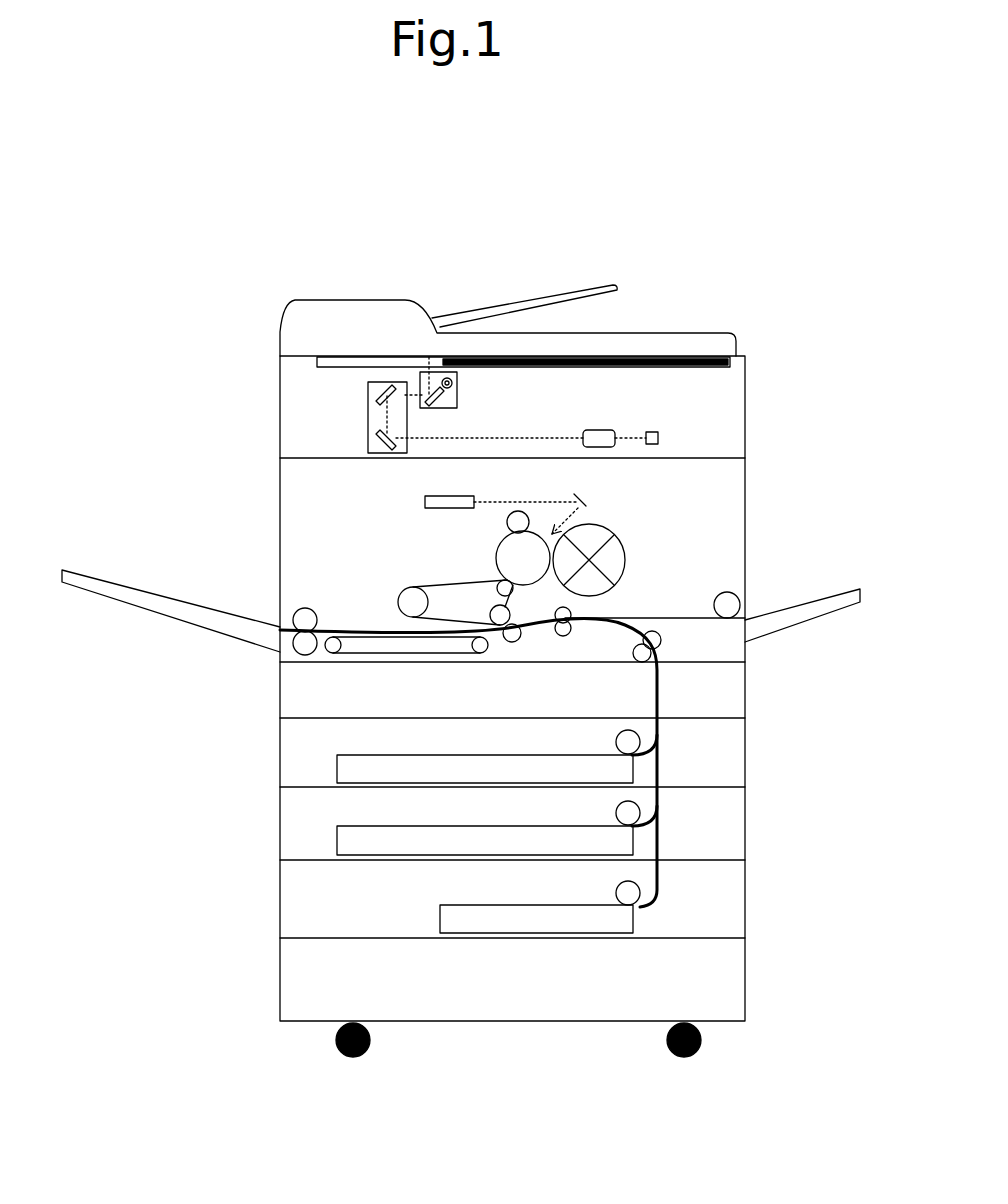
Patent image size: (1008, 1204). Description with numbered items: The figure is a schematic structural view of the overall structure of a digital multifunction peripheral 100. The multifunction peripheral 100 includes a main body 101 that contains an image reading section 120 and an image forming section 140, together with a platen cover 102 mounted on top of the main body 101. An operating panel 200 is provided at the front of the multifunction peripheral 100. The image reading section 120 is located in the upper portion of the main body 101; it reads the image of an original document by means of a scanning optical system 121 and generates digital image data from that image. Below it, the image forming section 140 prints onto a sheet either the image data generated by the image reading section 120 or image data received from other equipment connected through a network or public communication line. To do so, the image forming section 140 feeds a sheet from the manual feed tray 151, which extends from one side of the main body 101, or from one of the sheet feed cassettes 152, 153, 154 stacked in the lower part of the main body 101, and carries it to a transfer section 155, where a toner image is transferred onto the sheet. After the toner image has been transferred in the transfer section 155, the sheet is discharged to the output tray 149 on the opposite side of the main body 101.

The multifunction peripheral 100 is at (737, 224).
The main body 101 is at (258, 470).
The platen cover 102 is at (258, 302).
The operating panel 200 is at (733, 353).
The scanning optical system 121 is at (728, 390).
The image reading section 120 is at (745, 425).
The image forming section 140 is at (745, 535).
The transfer section 155 is at (513, 644).
The output tray 149 is at (87, 580).
The manual feed tray 151 is at (795, 620).
The sheet feed cassette 152 is at (345, 766).
The sheet feed cassette 153 is at (345, 836).
The sheet feed cassette 154 is at (445, 918).